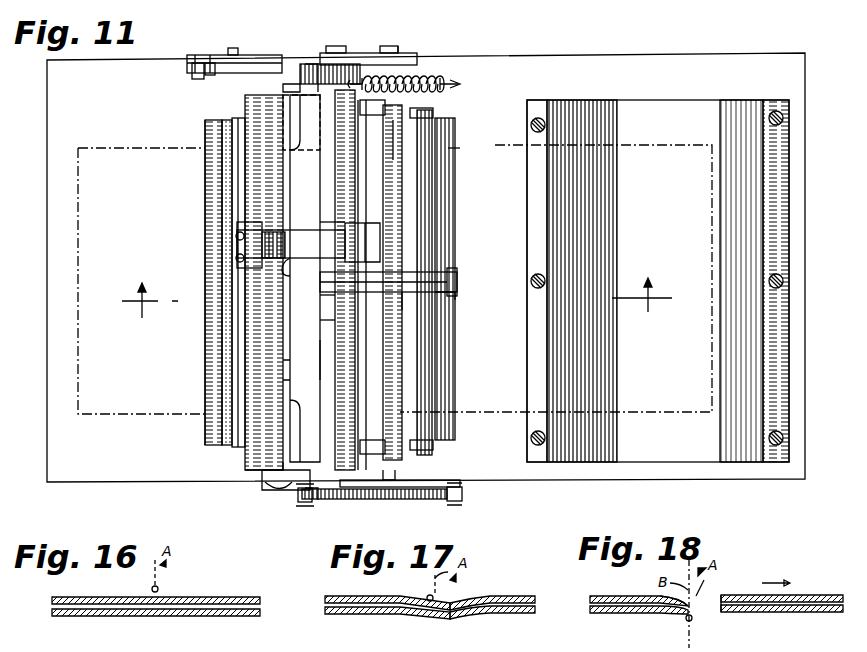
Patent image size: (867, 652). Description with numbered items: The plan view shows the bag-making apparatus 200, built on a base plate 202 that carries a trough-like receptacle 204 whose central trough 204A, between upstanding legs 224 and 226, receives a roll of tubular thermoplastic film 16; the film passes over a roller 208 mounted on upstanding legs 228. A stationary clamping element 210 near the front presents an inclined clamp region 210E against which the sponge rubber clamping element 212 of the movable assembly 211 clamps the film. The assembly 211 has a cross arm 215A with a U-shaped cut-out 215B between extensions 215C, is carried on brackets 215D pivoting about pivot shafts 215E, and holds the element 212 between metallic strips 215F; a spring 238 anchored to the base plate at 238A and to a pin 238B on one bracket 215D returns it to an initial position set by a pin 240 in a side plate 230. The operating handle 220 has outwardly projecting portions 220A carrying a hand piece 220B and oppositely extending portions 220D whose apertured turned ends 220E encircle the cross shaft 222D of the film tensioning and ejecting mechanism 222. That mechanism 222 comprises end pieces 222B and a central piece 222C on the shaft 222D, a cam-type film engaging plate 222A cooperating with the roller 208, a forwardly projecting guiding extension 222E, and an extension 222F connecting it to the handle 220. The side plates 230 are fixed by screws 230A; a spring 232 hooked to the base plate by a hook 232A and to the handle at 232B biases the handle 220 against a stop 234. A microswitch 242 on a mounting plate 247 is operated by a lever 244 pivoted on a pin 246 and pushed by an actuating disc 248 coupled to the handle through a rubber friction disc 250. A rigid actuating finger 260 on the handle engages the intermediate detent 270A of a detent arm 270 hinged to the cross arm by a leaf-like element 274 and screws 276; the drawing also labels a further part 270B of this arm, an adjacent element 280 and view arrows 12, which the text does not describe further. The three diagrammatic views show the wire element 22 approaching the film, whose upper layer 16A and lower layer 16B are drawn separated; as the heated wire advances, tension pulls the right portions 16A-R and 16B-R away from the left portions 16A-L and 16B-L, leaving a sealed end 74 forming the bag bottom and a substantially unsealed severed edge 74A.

In FIG. 11, the apparatus 200 is at (690, 35).
In FIG. 11, the base plate 202 is at (588, 62).
In FIG. 11, the trough-like receptacle 204 is at (684, 287).
In FIG. 11, the central trough 204A is at (648, 455).
In FIG. 11, the upstanding leg 224 is at (760, 463).
In FIG. 11, the upstanding leg 226 is at (537, 463).
In FIG. 11, the roller 208 is at (452, 152).
In FIG. 11, the stationary clamping element 210 is at (204, 431).
In FIG. 11, the clamp region 210E is at (212, 332).
In FIG. 11, the movably mounted assembly 211 is at (252, 473).
In FIG. 11, the clamping element 212 is at (225, 176).
In FIG. 11, the cross arm 215A is at (250, 156).
In FIG. 11, the U-shaped cut out portion 215B is at (302, 380).
In FIG. 11, the extensions 215C is at (290, 148).
In FIG. 11, the brackets 215D is at (286, 90).
In FIG. 11, the pivot shafts 215E is at (290, 78).
In FIG. 11, the metallic strips 215F is at (240, 355).
In FIG. 11, the operating handle 220 is at (420, 268).
In FIG. 11, the outwardly projecting portions 220A is at (430, 290).
In FIG. 11, the hand piece 220B is at (456, 302).
In FIG. 11, the handle portions 220D is at (395, 130).
In FIG. 11, the apertured turned ends 220E is at (312, 60).
In FIG. 11, the film tensioning and ejecting mechanism 222 is at (383, 400).
In FIG. 11, the film engaging plate 222A is at (393, 138).
In FIG. 11, the end pieces 222B is at (366, 100).
In FIG. 11, the central piece 222C is at (335, 292).
In FIG. 11, the cross shaft 222D is at (330, 322).
In FIG. 11, the forwardly projecting extension 222E is at (292, 366).
In FIG. 11, the extension 222F is at (440, 292).
In FIG. 11, the upstanding legs 228 is at (432, 110).
In FIG. 11, the side plates 230 is at (406, 54).
In FIG. 11, the screws 230A is at (400, 47).
In FIG. 11, the spring 232 is at (416, 77).
In FIG. 11, the hook 232A is at (456, 84).
In FIG. 11, the spring attachment point 232B is at (372, 103).
In FIG. 11, the stop 234 is at (388, 470).
In FIG. 11, the spring 238 is at (368, 500).
In FIG. 11, the spring anchorage 238A is at (458, 494).
In FIG. 11, the pin 238B is at (304, 504).
In FIG. 11, the pin 240 is at (265, 282).
In FIG. 11, the microswitch 242 is at (240, 56).
In FIG. 11, the lever 244 is at (214, 75).
In FIG. 11, the pin 246 is at (194, 78).
In FIG. 11, the mounting plate 247 is at (202, 56).
In FIG. 11, the actuating disc 248 is at (340, 64).
In FIG. 11, the rubber friction disc 250 is at (318, 93).
In FIG. 11, the actuating finger 260 is at (330, 222).
In FIG. 11, the detent arm 270 is at (304, 231).
In FIG. 11, the intermediate detent 270A is at (282, 268).
In FIG. 11, the lever block 270B is at (344, 246).
In FIG. 11, the hinge leaf-like element 274 is at (256, 268).
In FIG. 11, the screws 276 is at (236, 258).
In FIG. 11, the pin 280 is at (368, 245).
In FIG. 11, the tubular plastic film 16 is at (78, 222).
In FIG. 11, the section line 12 is at (389, 290).
In FIG. 16, the upper layer 16A is at (132, 597).
In FIG. 16, the lower layer 16B is at (98, 616).
In FIG. 17, the left portion of upper layer 16A-L is at (340, 596).
In FIG. 18, the left portion of upper layer 16A-L is at (602, 596).
In FIG. 17, the right portion of upper layer 16A-R is at (492, 588).
In FIG. 18, the right portion of upper layer 16A-R is at (836, 574).
In FIG. 17, the left portion of lower layer 16B-L is at (362, 616).
In FIG. 18, the left portion of lower layer 16B-L is at (622, 616).
In FIG. 17, the right portion of lower layer 16B-R is at (518, 614).
In FIG. 18, the right portion of lower layer 16B-R is at (768, 614).
In FIG. 16, the wire element 22 is at (160, 588).
In FIG. 17, the wire element 22 is at (428, 596).
In FIG. 18, the wire element 22 is at (686, 621).
In FIG. 18, the sealed end 74 is at (684, 612).
In FIG. 18, the severed edge 74A is at (714, 612).